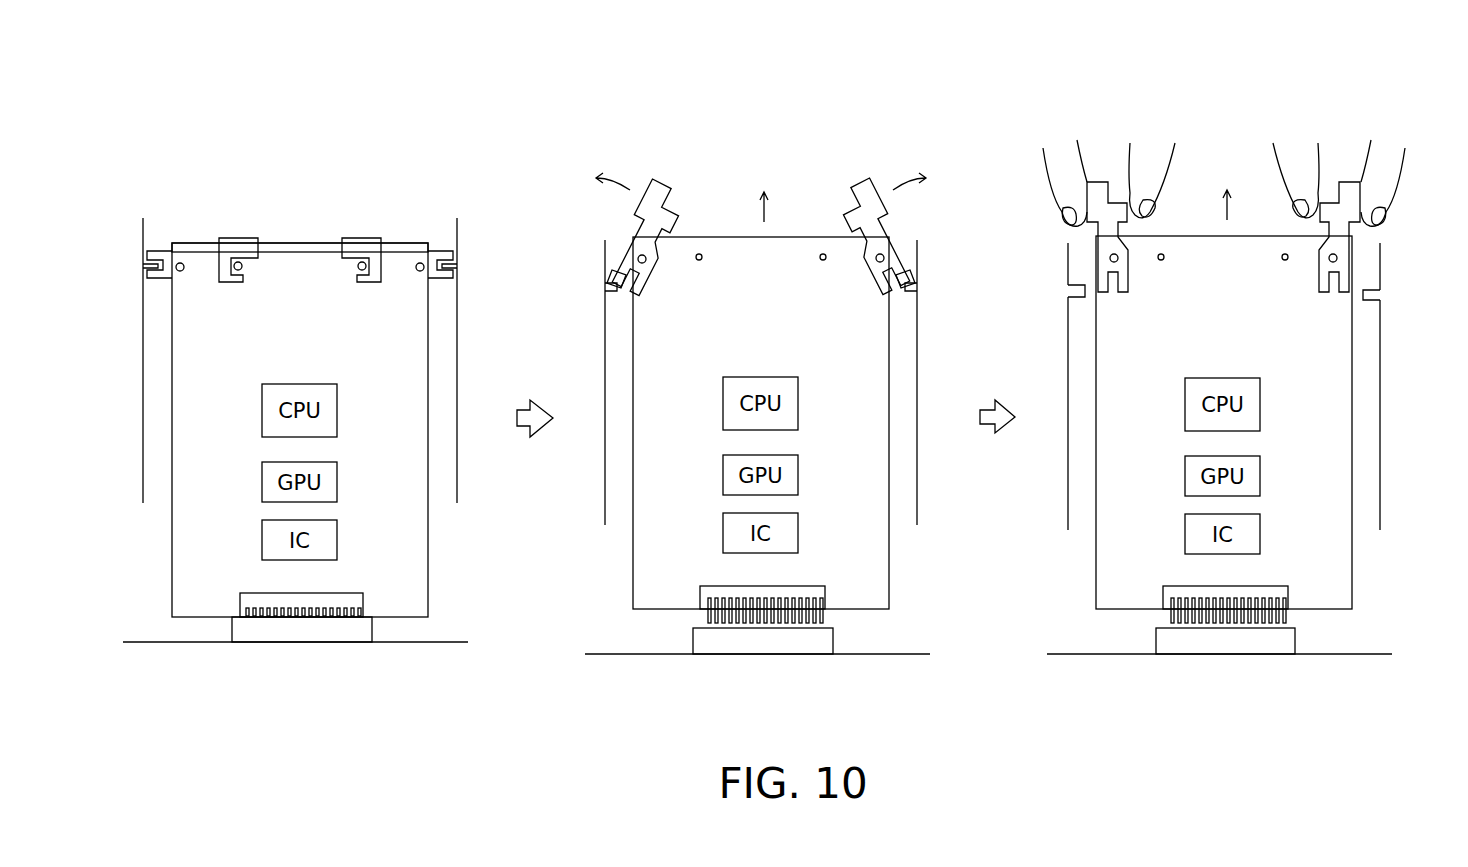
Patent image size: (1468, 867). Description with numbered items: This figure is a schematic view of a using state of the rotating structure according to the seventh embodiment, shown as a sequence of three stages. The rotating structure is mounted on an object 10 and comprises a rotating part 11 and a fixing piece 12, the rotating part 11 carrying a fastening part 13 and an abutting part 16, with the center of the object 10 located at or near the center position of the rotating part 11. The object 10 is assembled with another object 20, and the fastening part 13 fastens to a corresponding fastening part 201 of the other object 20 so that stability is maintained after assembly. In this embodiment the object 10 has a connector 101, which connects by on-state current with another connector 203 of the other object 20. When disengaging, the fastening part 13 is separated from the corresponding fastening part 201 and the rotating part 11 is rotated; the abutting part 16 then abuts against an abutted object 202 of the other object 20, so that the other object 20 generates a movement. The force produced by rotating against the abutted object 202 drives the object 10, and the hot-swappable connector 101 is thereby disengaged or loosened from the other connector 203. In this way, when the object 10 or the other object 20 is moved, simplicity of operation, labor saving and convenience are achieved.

The object 10 is at (188, 540).
The connector 101 is at (240, 607).
The rotating part 11 is at (198, 252).
The fixing piece 12 is at (183, 270).
The fastening part 13 is at (360, 237).
The abutting part 16 is at (156, 253).
The other object 20 is at (443, 642).
The corresponding fastening part 201 is at (358, 266).
The abutted object 202 is at (148, 267).
The another connector 203 is at (237, 630).